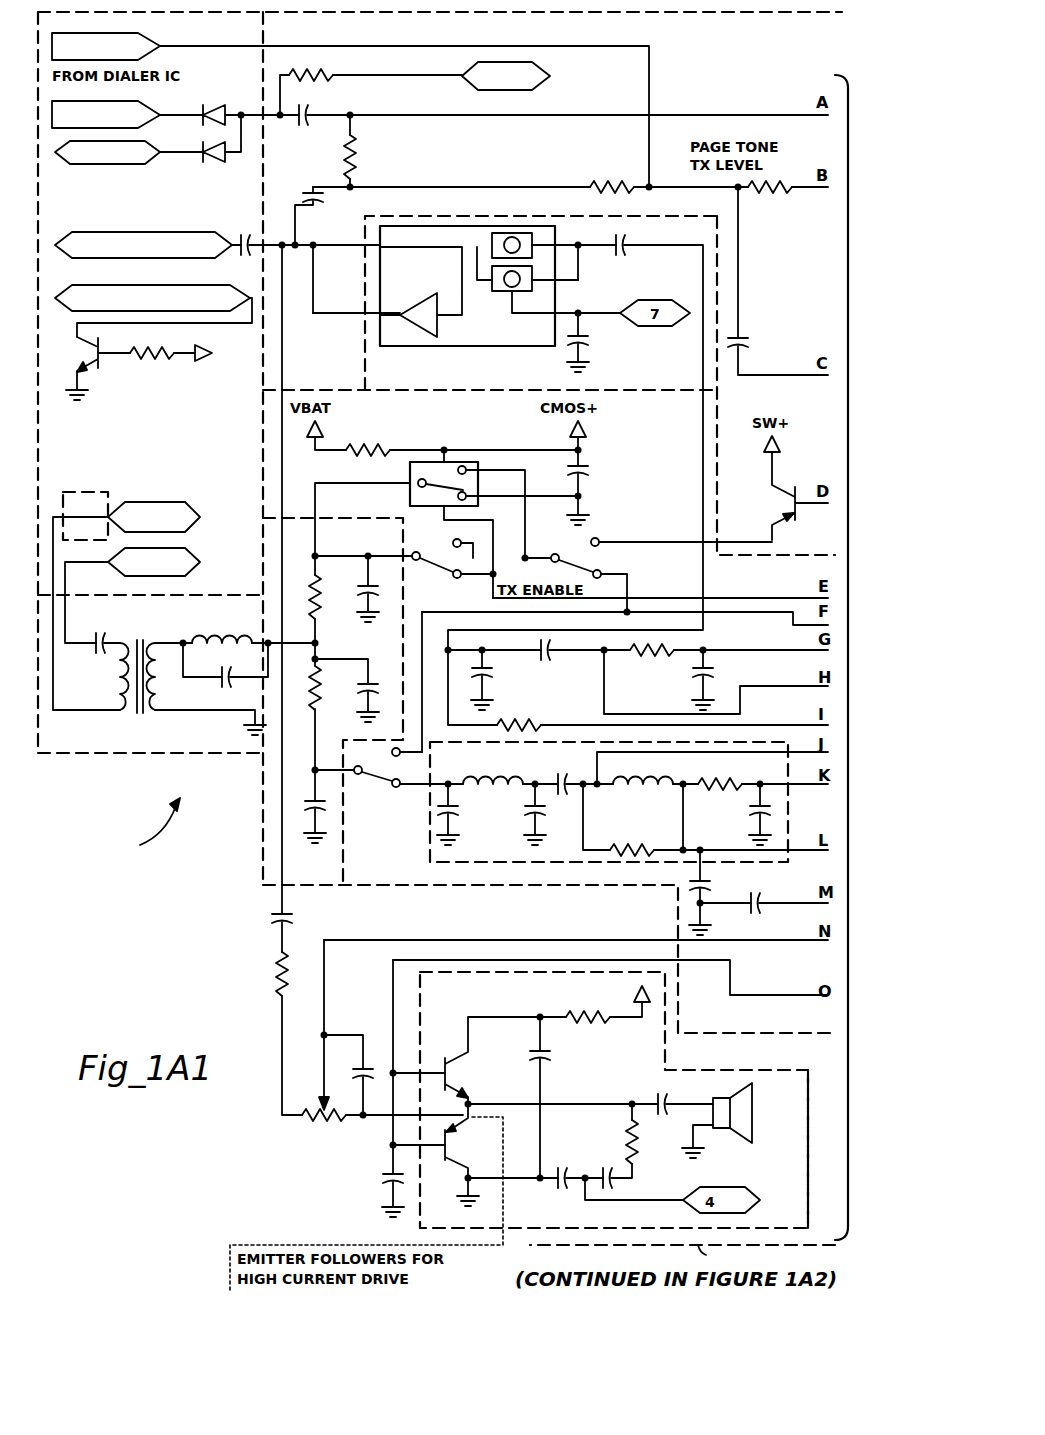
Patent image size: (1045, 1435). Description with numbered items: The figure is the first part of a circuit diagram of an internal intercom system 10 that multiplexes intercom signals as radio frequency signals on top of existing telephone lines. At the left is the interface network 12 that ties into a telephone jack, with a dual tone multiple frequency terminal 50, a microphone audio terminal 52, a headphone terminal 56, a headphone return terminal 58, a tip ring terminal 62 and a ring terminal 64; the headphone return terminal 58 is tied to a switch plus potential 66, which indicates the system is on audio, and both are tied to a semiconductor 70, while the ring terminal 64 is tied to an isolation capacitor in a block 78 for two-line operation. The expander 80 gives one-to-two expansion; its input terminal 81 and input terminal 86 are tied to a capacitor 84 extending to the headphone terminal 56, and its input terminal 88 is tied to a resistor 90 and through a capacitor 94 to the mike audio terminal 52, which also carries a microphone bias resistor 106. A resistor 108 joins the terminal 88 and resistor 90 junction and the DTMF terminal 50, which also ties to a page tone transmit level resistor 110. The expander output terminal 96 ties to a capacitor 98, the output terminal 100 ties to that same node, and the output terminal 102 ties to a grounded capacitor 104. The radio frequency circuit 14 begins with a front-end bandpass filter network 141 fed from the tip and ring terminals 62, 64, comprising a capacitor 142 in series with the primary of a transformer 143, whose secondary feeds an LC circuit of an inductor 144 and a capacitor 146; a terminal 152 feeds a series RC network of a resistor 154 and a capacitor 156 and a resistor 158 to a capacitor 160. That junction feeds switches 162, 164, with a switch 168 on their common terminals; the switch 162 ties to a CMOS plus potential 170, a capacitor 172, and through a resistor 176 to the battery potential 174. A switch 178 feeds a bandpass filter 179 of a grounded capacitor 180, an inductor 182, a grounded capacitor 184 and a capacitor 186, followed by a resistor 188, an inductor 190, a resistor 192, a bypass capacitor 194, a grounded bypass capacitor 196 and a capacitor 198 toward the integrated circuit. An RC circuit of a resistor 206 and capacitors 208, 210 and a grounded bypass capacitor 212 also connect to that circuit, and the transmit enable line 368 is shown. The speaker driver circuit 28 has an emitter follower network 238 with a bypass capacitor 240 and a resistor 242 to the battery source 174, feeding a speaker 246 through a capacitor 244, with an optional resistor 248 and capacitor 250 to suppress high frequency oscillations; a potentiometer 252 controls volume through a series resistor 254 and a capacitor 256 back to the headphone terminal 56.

The internal intercom system 10 is at (148, 830).
The interface network 12 is at (38, 416).
The radio frequency circuit 14 is at (293, 390).
The speaker driver circuit 28 is at (808, 1176).
The dual tone multiple frequency terminal 50 is at (140, 37).
The microphone audio terminal 52 is at (164, 122).
The headphone terminal 56 is at (212, 234).
The headphone return terminal 58 is at (58, 311).
The tip ring terminal 62 is at (182, 560).
The ring terminal 64 is at (182, 509).
The switch plus potential 66 is at (218, 350).
The semiconductor 70 is at (76, 348).
The block 78 is at (68, 492).
The expander 80 is at (664, 218).
The input terminal 81 is at (316, 252).
The capacitor 84 is at (242, 235).
The input terminal 86 is at (348, 316).
The input terminal 88 is at (352, 220).
The resistor 90 is at (356, 148).
The capacitor 94 is at (308, 119).
The output terminal 96 is at (574, 246).
The capacitor 98 is at (631, 246).
The output terminal 100 is at (584, 262).
The output terminal 102 is at (480, 344).
The grounded capacitor 104 is at (591, 343).
The microphone bias resistor 106 is at (338, 80).
The resistor 108 is at (614, 176).
The page tone transmit level resistor 110 is at (766, 192).
The front-end bandpass filter network 141 is at (244, 595).
The capacitor 142 is at (98, 638).
The transformer 143 is at (140, 642).
The inductor 144 is at (204, 638).
The capacitor 146 is at (220, 684).
The terminal 152 is at (316, 642).
The resistor 154 is at (335, 718).
The capacitor 156 is at (360, 686).
The resistor 158 is at (336, 610).
The capacitor 160 is at (363, 589).
The switch 162 is at (410, 502).
The switch 164 is at (442, 578).
The switch 168 is at (574, 558).
The CMOS plus potential 170 is at (582, 432).
The capacitor 172 is at (586, 474).
The battery potential 174 is at (642, 1020).
The resistor 176 is at (348, 448).
The switch 178 is at (376, 784).
The bandpass filter 179 is at (428, 854).
The grounded capacitor 180 is at (454, 812).
The inductor 182 is at (506, 775).
The grounded capacitor 184 is at (528, 808).
The capacitor 186 is at (557, 782).
The resistor 188 is at (705, 820).
The inductor 190 is at (643, 798).
The resistor 192 is at (718, 798).
The bypass capacitor 194 is at (754, 826).
The grounded bypass capacitor 196 is at (710, 884).
The capacitor 198 is at (758, 910).
The resistor 206 is at (664, 660).
The capacitor 208 is at (545, 658).
The capacitor 210 is at (710, 678).
The grounded bypass capacitor 212 is at (486, 676).
The emitter follower network 238 is at (472, 1104).
The bypass capacitor 240 is at (553, 1056).
The resistor 242 is at (565, 1012).
The capacitor 244 is at (658, 1096).
The speaker 246 is at (752, 1124).
The resistor 248 is at (636, 1142).
The capacitor 250 is at (606, 1168).
The potentiometer 252 is at (300, 1114).
The series resistor 254 is at (274, 983).
The capacitor 256 is at (272, 918).
The transmit enable line 368 is at (642, 598).